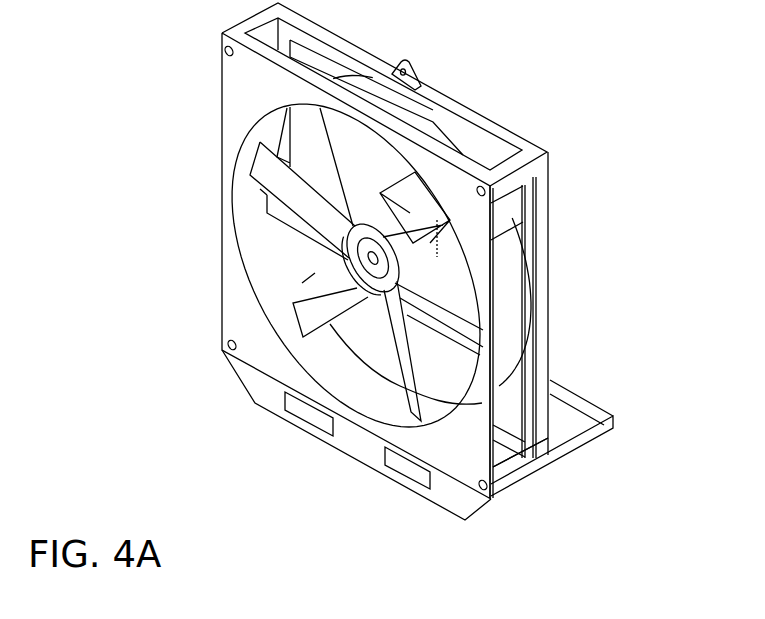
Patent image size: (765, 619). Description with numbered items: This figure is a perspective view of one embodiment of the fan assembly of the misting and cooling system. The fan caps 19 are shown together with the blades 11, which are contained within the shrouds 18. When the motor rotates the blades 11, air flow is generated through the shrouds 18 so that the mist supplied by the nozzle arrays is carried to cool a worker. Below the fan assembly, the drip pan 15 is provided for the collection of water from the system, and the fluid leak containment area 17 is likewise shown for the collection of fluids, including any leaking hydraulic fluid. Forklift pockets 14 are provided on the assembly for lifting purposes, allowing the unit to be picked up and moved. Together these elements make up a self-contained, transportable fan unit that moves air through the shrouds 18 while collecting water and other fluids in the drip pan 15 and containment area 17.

The blades 11 is at (268, 181).
The forklift pockets 14 is at (405, 473).
The drip pan 15 is at (572, 422).
The fluid leak containment area 17 is at (505, 466).
The shrouds 18 is at (343, 388).
The fan caps 19 is at (465, 462).